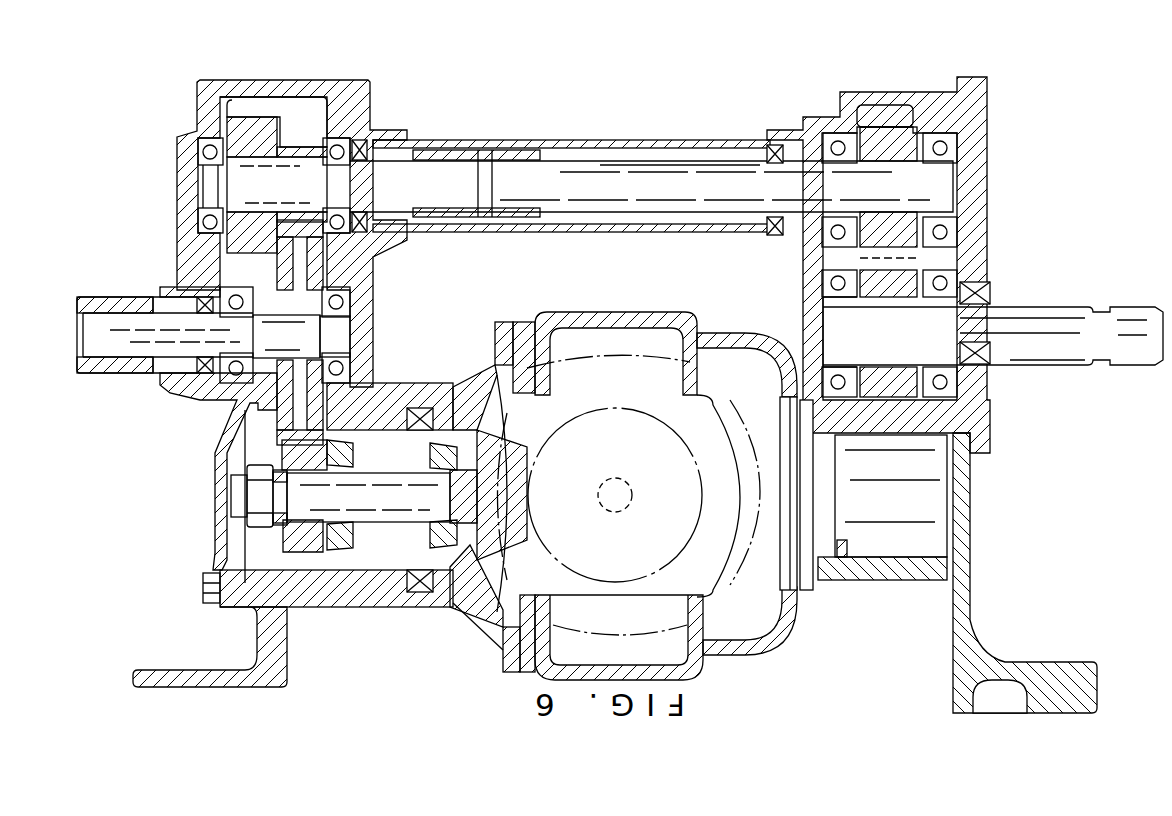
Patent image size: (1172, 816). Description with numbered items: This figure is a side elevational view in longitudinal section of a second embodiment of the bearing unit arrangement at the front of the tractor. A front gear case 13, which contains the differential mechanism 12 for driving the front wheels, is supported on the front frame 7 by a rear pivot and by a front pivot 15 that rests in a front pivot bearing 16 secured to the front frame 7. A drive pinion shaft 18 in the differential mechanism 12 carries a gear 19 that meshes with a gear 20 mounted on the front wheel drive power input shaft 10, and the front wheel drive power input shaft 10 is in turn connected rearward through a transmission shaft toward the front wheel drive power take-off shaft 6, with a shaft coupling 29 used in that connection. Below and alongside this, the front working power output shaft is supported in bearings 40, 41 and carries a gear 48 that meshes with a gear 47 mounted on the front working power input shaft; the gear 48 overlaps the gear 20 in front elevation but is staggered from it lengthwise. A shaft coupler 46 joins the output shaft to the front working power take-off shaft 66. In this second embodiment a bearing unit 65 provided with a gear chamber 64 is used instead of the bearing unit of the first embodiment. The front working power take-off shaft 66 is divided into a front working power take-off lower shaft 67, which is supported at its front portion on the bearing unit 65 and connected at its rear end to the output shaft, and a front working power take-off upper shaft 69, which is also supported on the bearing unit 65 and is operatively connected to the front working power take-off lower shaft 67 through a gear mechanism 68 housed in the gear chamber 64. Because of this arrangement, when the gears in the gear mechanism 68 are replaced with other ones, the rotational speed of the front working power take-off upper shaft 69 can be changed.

The front wheel drive power take-off shaft 6 is at (217, 385).
The front frame 7 is at (397, 597).
The front wheel drive power input shaft 10 is at (166, 327).
The differential mechanism 12 is at (497, 593).
The front gear case 13 is at (583, 303).
The front pivot 15 is at (907, 543).
The front pivot bearing 16 is at (973, 640).
The drive pinion shaft 18 is at (380, 515).
The gear 19 is at (305, 557).
The gear 20 is at (313, 230).
The shaft coupling 29 is at (100, 312).
The bearing 40 is at (340, 140).
The bearing 41 is at (177, 145).
The shaft coupler 46 is at (527, 141).
The gear 47 is at (257, 405).
The gear 48 is at (237, 107).
The gear chamber 64 is at (860, 107).
The bearing unit 65 is at (910, 95).
The front working power take-off shaft 66 is at (670, 157).
The front working power take-off lower shaft 67 is at (623, 167).
The gear mechanism 68 is at (917, 260).
The front working power take-off upper shaft 69 is at (1120, 305).